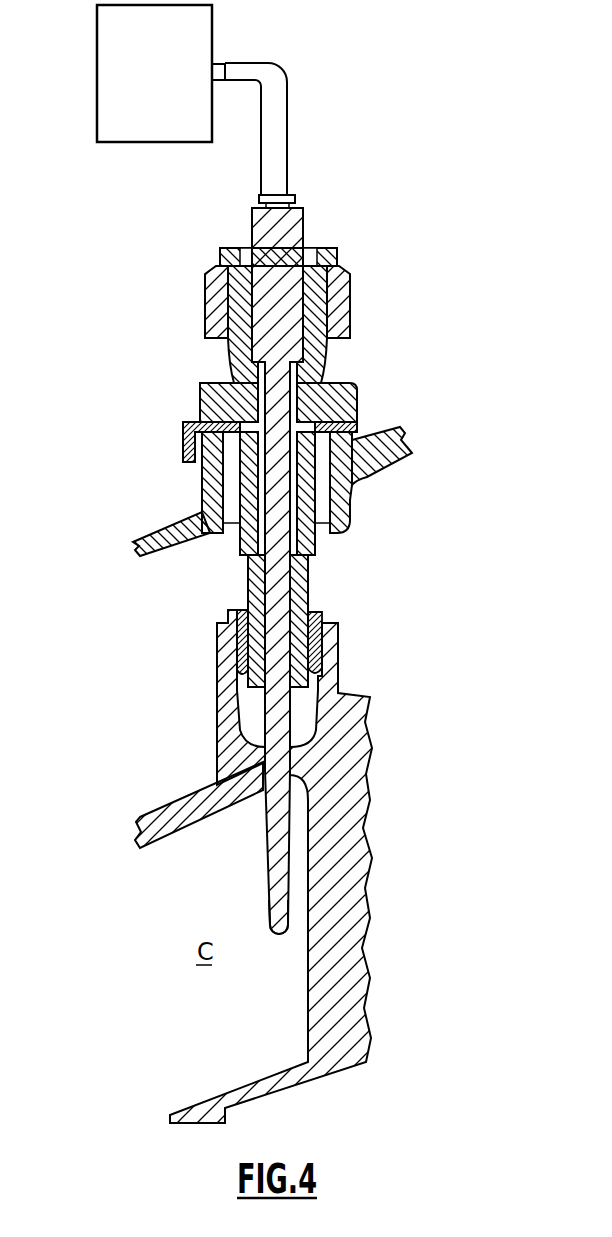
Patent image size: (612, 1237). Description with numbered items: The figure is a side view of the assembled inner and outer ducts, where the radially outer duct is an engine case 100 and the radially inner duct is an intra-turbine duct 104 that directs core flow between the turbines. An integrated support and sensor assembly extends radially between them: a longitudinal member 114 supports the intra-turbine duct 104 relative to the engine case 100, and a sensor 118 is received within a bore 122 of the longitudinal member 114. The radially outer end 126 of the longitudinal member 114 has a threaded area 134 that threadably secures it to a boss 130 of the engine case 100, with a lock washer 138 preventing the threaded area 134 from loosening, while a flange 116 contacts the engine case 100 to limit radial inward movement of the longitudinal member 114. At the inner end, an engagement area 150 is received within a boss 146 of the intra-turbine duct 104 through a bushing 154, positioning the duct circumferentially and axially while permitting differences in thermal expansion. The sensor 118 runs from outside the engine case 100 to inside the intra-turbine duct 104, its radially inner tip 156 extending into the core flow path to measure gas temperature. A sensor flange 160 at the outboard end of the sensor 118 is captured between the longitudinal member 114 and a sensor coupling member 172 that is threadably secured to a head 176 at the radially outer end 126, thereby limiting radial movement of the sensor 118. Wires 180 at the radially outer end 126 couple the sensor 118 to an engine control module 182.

The engine case 100 is at (125, 205).
The intra-turbine duct 104 is at (208, 792).
The longitudinal member 114 is at (348, 385).
The flange 116 is at (360, 385).
The sensor 118 is at (305, 228).
The bore 122 is at (298, 408).
The radially outer end 126 is at (108, 508).
The boss 130 is at (204, 474).
The threaded area 134 is at (352, 490).
The lock washer 138 is at (197, 424).
The boss 146 is at (340, 648).
The engagement area 150 is at (312, 612).
The bushing 154 is at (325, 623).
The radially inner tip 156 is at (287, 912).
The sensor flange 160 is at (323, 262).
The sensor coupling member 172 is at (353, 295).
The head 176 is at (227, 350).
The wires 180 is at (287, 80).
The engine control module 182 is at (175, 129).